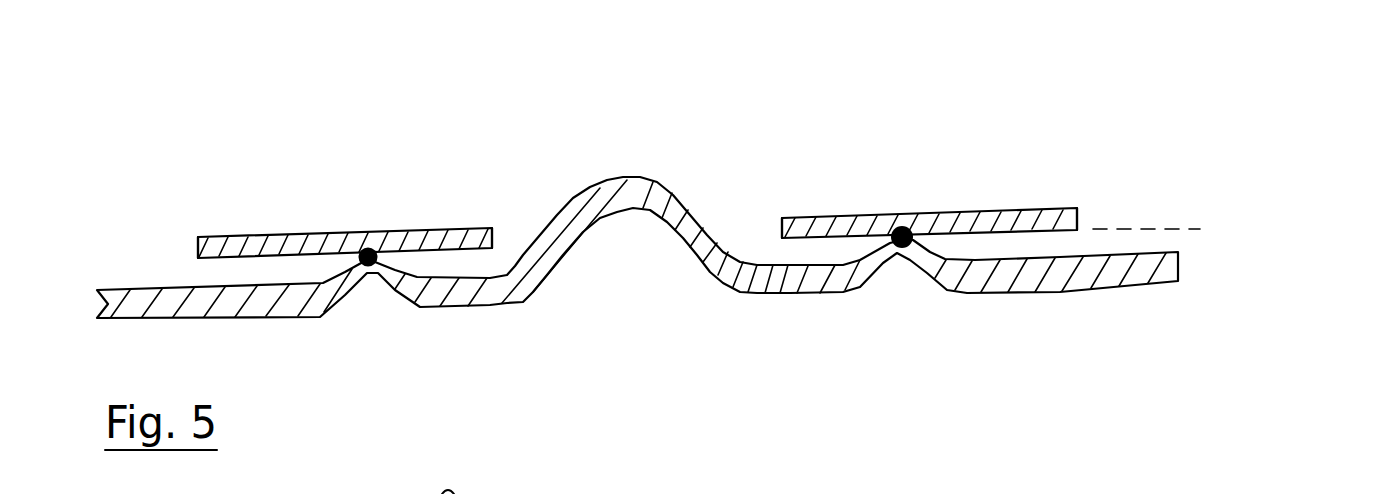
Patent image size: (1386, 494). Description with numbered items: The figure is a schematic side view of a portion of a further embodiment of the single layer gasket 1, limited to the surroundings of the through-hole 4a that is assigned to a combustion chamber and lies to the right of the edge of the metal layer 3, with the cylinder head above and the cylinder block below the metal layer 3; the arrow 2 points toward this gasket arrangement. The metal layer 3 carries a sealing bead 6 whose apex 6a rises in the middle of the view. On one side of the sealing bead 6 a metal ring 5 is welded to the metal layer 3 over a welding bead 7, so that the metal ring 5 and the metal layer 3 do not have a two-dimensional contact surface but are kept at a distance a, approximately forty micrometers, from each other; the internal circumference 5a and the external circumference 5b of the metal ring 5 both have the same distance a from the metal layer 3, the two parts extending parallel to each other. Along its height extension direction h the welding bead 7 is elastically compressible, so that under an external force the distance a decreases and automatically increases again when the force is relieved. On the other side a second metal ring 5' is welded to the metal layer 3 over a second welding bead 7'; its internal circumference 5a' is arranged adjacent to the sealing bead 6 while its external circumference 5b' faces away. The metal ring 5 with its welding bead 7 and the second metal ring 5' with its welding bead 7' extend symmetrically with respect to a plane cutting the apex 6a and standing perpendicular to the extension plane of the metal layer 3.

The gasket 1 is at (229, 111).
The heat transfer plate assembly 2 is at (283, 108).
The metal layer 3 is at (218, 307).
The through-hole 4a is at (1333, 248).
The metal ring 5 is at (929, 199).
The second metal ring 5' is at (345, 225).
The internal circumference 5a is at (1116, 197).
The internal circumference 5a' is at (519, 210).
The external circumference 5b is at (759, 202).
The external circumference 5b' is at (169, 216).
The sealing bead 6 is at (637, 272).
The apex 6a is at (637, 180).
The welding bead 7 is at (902, 283).
The second welding bead 7' is at (372, 300).
The height extension direction h is at (925, 84).
The distance a is at (1200, 229).